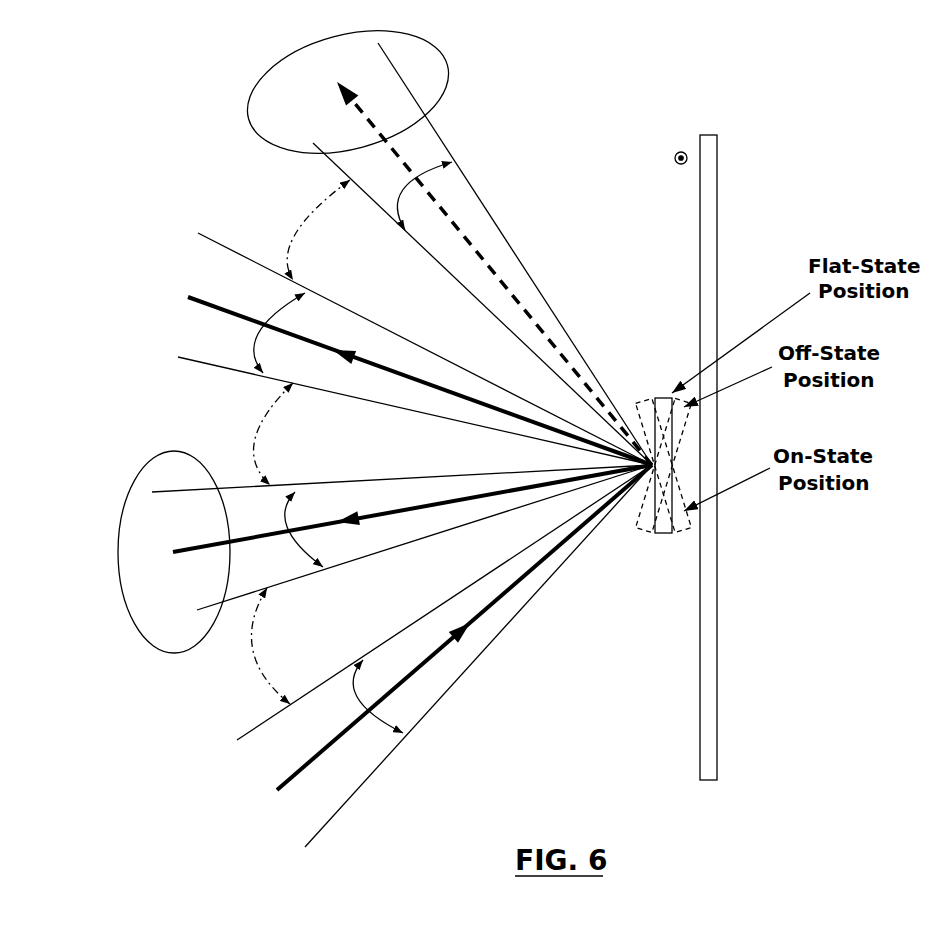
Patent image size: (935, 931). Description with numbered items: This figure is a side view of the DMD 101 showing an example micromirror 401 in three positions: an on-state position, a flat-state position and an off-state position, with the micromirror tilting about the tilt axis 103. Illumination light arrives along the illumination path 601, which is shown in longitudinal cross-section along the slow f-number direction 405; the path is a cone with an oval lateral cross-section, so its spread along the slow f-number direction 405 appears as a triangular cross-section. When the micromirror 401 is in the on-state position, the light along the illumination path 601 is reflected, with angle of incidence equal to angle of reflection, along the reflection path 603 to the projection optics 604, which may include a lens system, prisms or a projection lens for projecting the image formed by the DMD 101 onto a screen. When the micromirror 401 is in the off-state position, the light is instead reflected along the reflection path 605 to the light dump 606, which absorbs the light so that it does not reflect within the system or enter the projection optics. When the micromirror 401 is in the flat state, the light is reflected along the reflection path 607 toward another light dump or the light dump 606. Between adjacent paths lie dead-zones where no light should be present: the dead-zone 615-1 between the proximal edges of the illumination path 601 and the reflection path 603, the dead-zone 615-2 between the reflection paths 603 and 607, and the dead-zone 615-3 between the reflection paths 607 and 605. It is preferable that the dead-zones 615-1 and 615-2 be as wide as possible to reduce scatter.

The DMD 101 is at (708, 238).
The tilt axis 103 is at (675, 158).
The micromirror 401 is at (672, 465).
The slow f-number direction 405 is at (423, 160).
The illumination path 601 is at (371, 771).
The reflection path 603 is at (286, 569).
The projection optics 604 is at (180, 586).
The reflection path 605 is at (396, 181).
The light dump 606 is at (305, 122).
The reflection path 607 is at (220, 336).
The dead-zone 615-1 is at (256, 661).
The dead-zone 615-2 is at (258, 430).
The dead-zone 615-3 is at (294, 234).